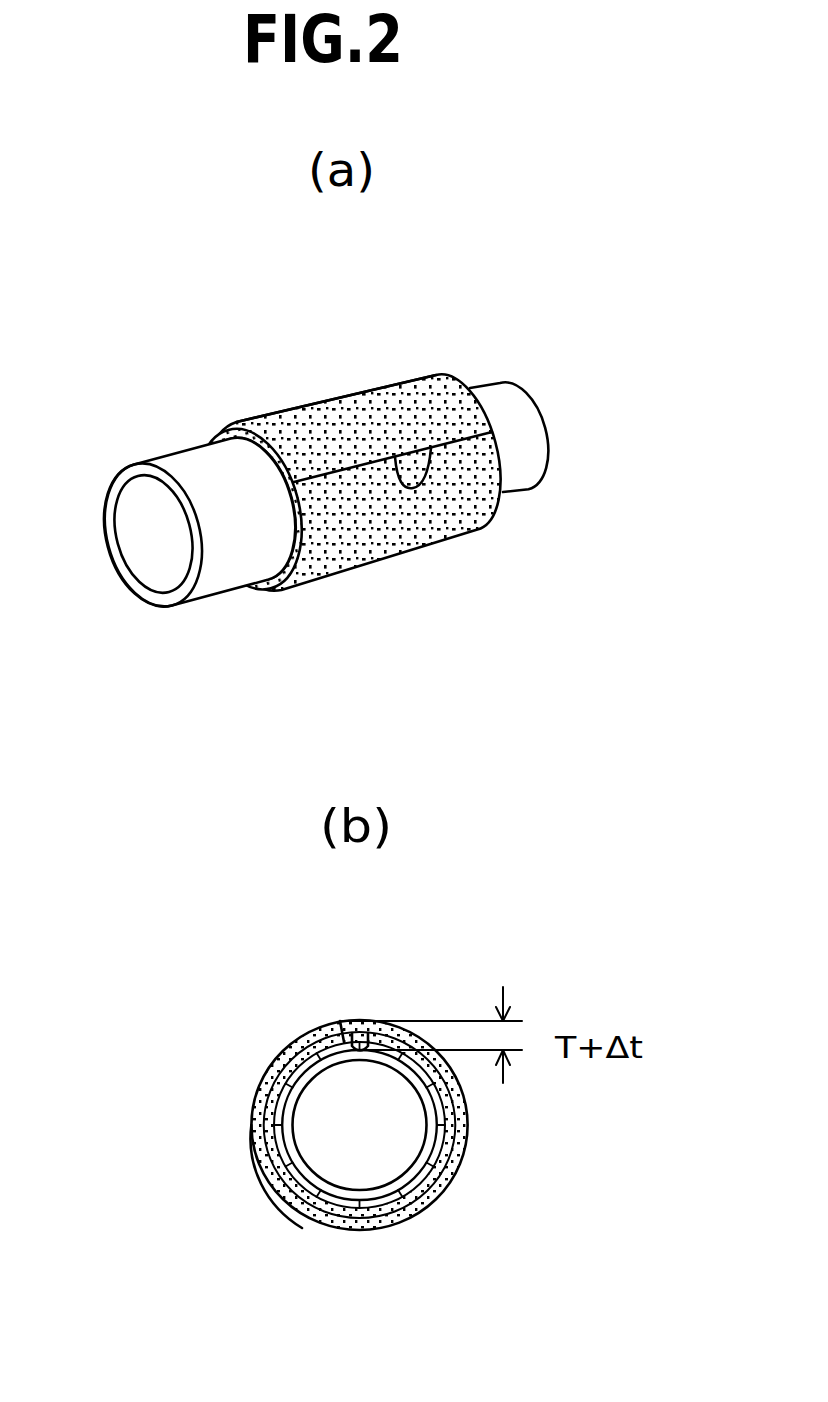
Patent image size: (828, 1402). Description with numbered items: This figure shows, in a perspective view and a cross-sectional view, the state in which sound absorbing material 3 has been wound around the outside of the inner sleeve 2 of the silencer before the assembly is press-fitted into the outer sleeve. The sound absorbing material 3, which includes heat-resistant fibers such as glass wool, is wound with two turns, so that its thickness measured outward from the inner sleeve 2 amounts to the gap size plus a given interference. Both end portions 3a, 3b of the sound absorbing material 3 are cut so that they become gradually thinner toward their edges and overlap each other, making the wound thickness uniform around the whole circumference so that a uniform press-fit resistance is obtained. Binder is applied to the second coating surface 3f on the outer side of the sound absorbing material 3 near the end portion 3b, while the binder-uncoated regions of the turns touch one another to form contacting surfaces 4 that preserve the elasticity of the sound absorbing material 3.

The inner sleeve 2 is at (178, 473).
The sound absorbing material 3 is at (310, 420).
The end portion of sound absorbing material 3a is at (337, 1025).
The other end portion of sound absorbing material 3b is at (430, 452).
The second coating surface 3f is at (375, 395).
The contacting surfaces 4 is at (203, 437).